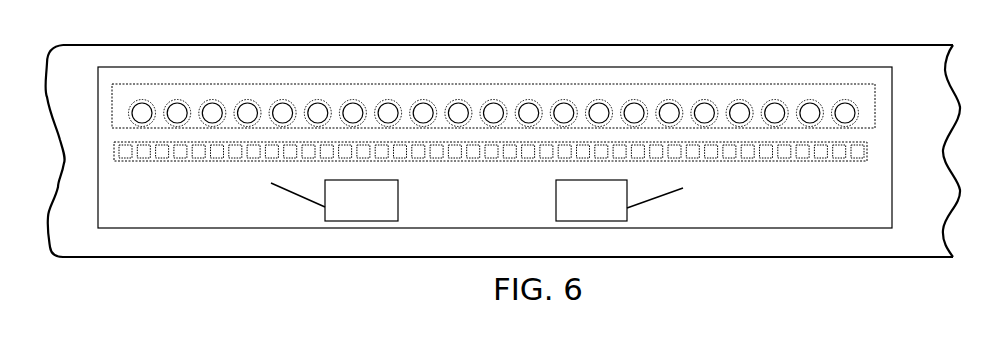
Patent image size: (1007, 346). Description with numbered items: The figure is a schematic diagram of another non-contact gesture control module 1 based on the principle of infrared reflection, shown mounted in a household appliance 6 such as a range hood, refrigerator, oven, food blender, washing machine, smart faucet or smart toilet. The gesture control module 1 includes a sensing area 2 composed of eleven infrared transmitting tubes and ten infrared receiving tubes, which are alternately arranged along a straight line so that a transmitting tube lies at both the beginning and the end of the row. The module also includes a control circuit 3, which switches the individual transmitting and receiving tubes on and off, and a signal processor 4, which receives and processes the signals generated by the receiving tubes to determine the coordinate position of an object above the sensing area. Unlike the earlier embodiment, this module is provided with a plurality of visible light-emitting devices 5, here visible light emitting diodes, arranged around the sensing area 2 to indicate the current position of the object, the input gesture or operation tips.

The non-contact gesture control module 1 is at (835, 67).
The sensing area 2 is at (871, 84).
The control circuit 3 is at (262, 196).
The signal processor 4 is at (705, 197).
The visible light-emitting devices 5 is at (868, 162).
The household appliance 6 is at (709, 243).